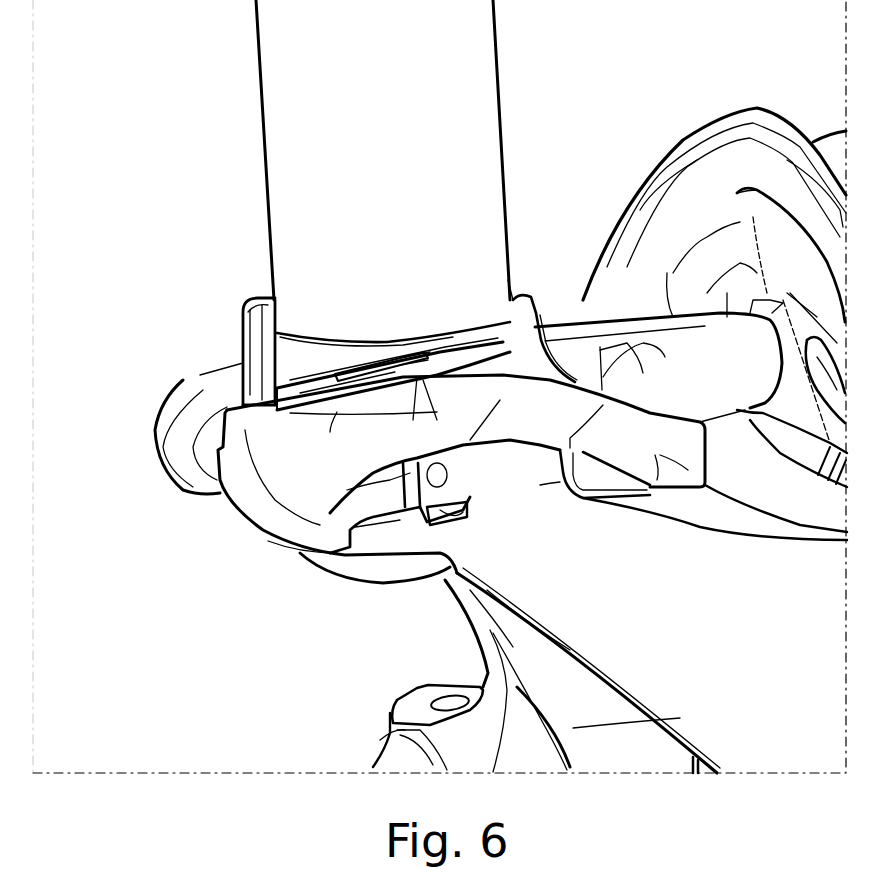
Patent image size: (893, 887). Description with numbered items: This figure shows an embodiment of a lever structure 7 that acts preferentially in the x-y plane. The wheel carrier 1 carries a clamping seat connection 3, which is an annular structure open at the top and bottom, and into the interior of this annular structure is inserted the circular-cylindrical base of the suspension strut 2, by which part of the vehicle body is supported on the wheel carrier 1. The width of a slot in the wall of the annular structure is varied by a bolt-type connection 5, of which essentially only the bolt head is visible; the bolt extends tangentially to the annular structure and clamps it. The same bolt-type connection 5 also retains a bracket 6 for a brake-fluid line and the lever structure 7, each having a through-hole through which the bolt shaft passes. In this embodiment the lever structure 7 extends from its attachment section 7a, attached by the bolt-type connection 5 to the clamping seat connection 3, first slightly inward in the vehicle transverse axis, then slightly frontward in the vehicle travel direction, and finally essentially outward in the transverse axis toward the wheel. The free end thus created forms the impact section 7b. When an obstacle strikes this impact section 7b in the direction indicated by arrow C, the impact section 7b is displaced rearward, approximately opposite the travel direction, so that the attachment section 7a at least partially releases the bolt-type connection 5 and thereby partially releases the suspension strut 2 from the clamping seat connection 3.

The wheel carrier 1 is at (698, 647).
The suspension strut 2 is at (300, 122).
The clamping seat connection 3 is at (333, 357).
The bolt-type connection 5 is at (398, 540).
The bracket 6 is at (470, 470).
The lever structure 7 is at (280, 495).
The attachment section 7a is at (350, 565).
The impact section 7b is at (657, 460).
The arrow C is at (668, 468).